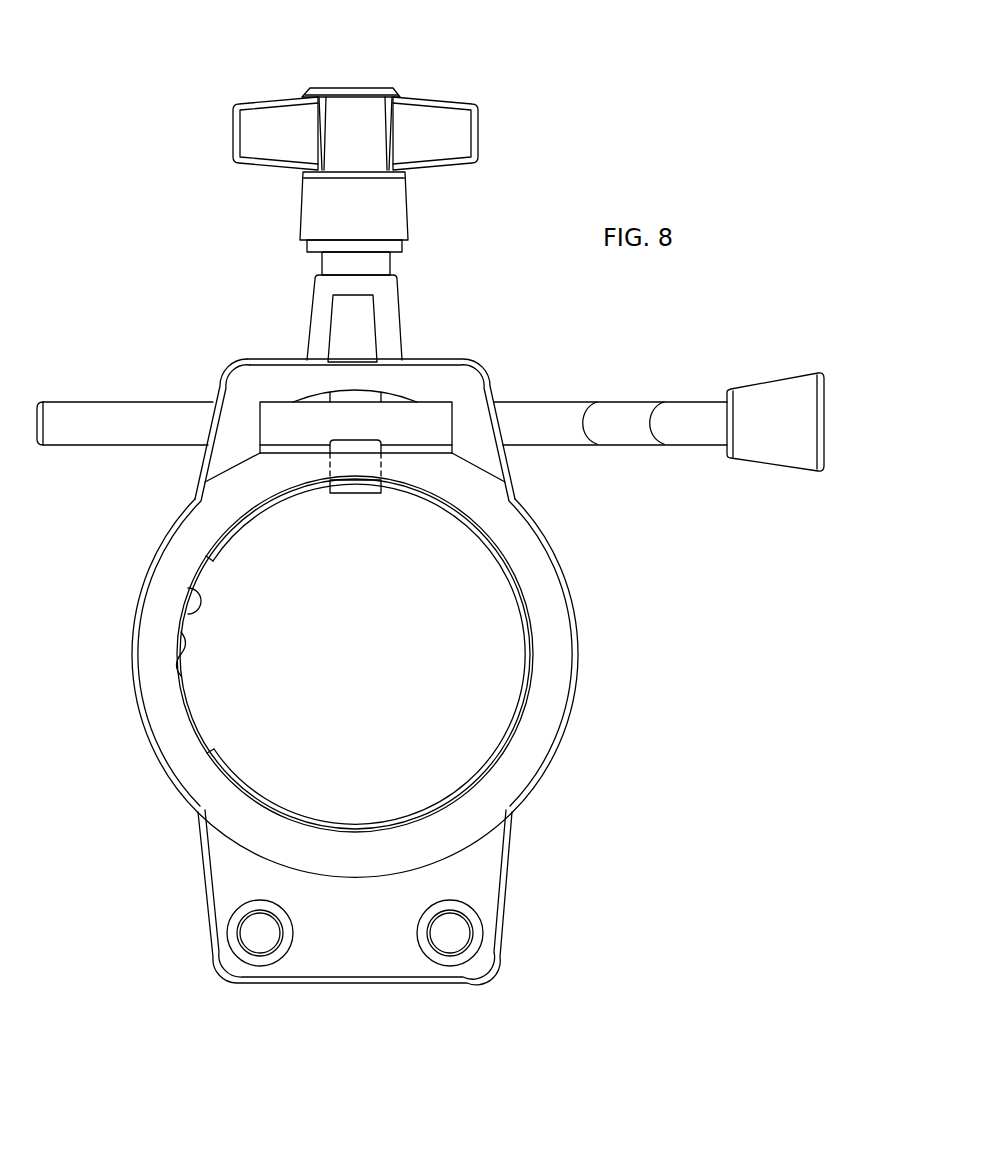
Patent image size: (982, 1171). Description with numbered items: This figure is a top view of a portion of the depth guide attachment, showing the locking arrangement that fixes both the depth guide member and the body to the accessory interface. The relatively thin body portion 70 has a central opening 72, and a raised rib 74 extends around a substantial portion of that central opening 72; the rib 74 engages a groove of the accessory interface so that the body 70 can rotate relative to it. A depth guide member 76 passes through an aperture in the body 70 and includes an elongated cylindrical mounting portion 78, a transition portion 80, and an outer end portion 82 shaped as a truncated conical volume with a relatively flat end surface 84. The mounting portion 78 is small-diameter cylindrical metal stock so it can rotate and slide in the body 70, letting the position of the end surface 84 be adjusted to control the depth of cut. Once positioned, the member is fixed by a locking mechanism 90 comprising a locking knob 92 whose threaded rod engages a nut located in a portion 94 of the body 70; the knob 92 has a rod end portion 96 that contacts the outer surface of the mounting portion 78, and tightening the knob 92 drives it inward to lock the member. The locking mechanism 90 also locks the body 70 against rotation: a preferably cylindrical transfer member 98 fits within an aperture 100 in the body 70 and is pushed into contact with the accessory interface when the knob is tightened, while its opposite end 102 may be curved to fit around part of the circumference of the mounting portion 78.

The body portion 70 is at (472, 878).
The central opening 72 is at (187, 590).
The raised rib 74 is at (445, 522).
The depth guide member 76 is at (548, 394).
The elongated cylindrical mounting portion 78 is at (118, 400).
The transition portion 80 is at (627, 428).
The outer end portion 82 is at (773, 410).
The end surface 84 is at (826, 471).
The locking mechanism 90 is at (445, 64).
The locking knob 92 is at (273, 127).
The portion of the body 94 is at (385, 318).
The rod end portion 96 is at (350, 405).
The transfer member 98 is at (346, 488).
The aperture 100 is at (376, 498).
The opposite end 102 is at (362, 448).